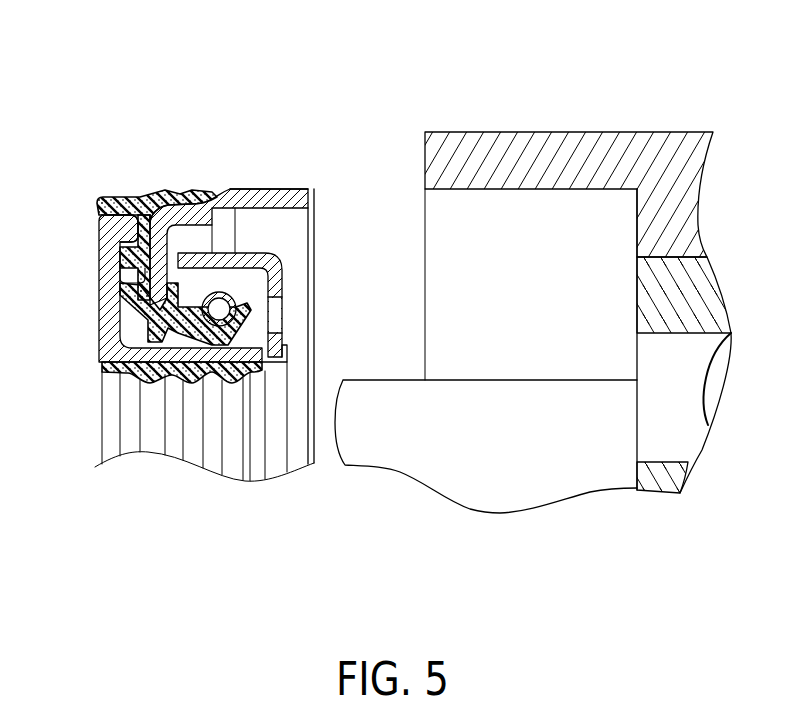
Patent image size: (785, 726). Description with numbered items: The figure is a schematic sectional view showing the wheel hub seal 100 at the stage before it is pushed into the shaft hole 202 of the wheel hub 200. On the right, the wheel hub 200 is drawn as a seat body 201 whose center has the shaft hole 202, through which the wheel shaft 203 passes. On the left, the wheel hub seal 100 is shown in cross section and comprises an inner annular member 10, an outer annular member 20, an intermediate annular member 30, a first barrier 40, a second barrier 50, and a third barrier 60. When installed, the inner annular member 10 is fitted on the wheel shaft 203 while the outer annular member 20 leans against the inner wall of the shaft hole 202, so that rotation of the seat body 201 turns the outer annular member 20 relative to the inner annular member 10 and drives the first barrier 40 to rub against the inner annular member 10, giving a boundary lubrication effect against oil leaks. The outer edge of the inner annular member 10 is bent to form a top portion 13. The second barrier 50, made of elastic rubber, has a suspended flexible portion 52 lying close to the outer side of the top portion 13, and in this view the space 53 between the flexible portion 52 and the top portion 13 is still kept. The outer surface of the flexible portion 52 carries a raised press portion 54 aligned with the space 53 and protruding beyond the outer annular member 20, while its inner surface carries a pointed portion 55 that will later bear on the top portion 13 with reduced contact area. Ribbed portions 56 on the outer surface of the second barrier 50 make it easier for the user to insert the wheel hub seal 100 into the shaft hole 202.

The inner annular member 10 is at (91, 292).
The top portion 13 is at (123, 200).
The outer annular member 20 is at (306, 186).
The intermediate annular member 30 is at (290, 270).
The first barrier 40 is at (267, 317).
The second barrier 50 is at (203, 192).
The flexible portion 52 is at (113, 200).
The space 53 is at (99, 220).
The press portion 54 is at (155, 193).
The pointed portion 55 is at (98, 206).
The ribbed portions 56 is at (197, 183).
The third barrier 60 is at (119, 300).
The wheel hub seal 100 is at (268, 185).
The wheel hub 200 is at (607, 127).
The seat body 201 is at (673, 148).
The shaft hole 202 is at (445, 208).
The wheel shaft 203 is at (518, 482).